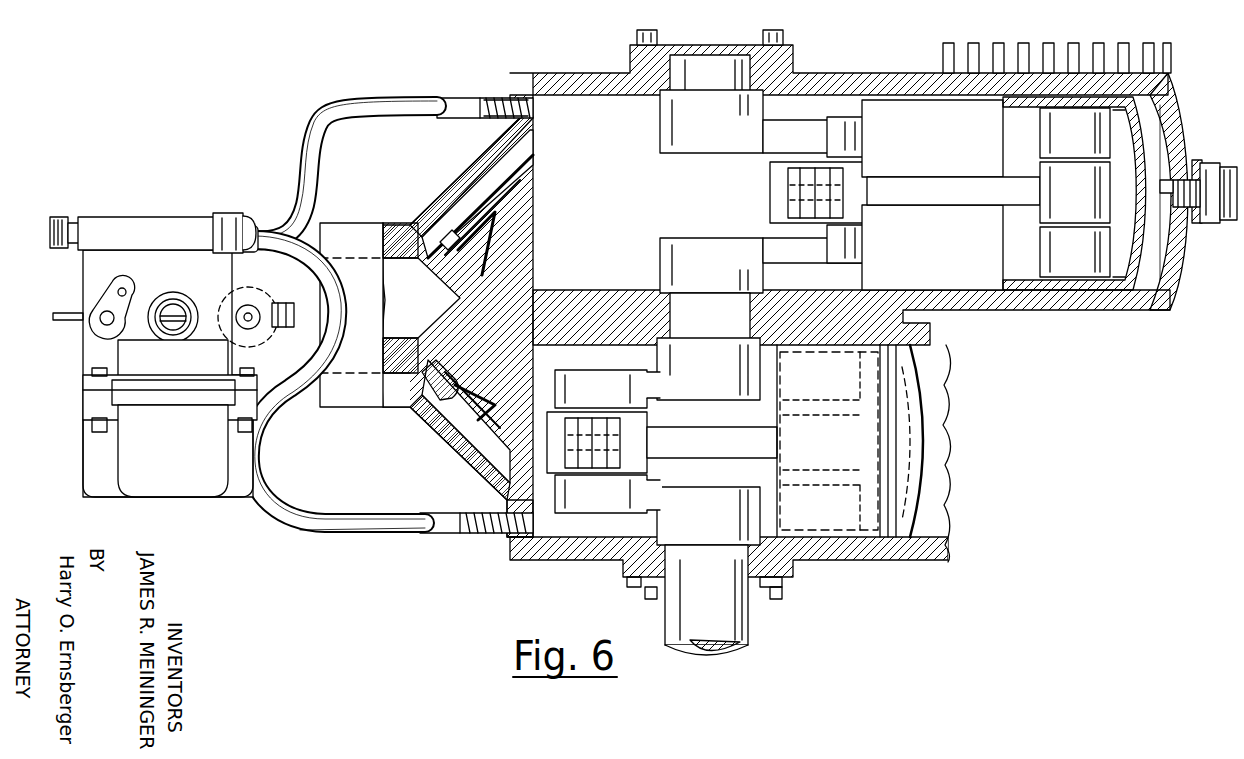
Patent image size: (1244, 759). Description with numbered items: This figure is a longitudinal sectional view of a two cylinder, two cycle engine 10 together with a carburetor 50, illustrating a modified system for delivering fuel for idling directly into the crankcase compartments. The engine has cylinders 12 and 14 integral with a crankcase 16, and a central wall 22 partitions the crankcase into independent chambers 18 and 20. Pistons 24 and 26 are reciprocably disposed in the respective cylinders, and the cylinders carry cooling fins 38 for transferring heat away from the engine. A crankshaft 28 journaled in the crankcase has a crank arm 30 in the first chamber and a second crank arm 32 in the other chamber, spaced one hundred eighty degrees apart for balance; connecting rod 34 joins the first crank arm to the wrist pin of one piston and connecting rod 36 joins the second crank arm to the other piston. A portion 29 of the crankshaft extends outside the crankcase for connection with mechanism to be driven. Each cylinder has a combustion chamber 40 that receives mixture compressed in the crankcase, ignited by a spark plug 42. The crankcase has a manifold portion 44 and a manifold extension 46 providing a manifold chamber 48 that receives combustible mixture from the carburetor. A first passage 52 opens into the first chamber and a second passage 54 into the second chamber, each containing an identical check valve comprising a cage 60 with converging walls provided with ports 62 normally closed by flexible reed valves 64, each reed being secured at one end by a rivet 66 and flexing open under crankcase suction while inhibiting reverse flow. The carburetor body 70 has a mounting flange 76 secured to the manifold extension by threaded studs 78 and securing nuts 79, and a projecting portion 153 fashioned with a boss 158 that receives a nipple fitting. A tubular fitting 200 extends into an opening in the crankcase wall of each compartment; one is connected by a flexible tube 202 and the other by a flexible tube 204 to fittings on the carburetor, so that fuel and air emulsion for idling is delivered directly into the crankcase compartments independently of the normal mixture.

The engine 10 is at (785, 312).
The cylinder 12 is at (1070, 300).
The cylinder 14 is at (905, 560).
The crankcase 16 is at (552, 54).
The chamber 18 is at (650, 202).
The chamber 20 is at (740, 418).
The central wall 22 is at (625, 292).
The piston 24 is at (1152, 115).
The piston 26 is at (918, 385).
The crankshaft 28 is at (683, 248).
The crankshaft portion 29 is at (750, 625).
The crank arm 30 is at (868, 135).
The crank arm 32 is at (530, 552).
The connecting rod 34 is at (903, 172).
The connecting rod 36 is at (705, 465).
The cooling fins 38 is at (1030, 42).
The combustion chamber 40 is at (1142, 160).
The spark plug 42 is at (1222, 163).
The manifold portion 44 is at (500, 152).
The manifold extension 46 is at (352, 242).
The manifold chamber 48 is at (420, 322).
The carburetor 50 is at (172, 321).
The first passage 52 is at (525, 175).
The second passage 54 is at (478, 448).
The cage 60 is at (432, 255).
The ports 62 is at (512, 200).
The reed valve 64 is at (515, 220).
The rivet 66 is at (512, 262).
The carburetor body 70 is at (148, 262).
The mounting flange 76 is at (312, 396).
The threaded studs 78 is at (272, 330).
The securing nuts 79 is at (290, 300).
The projecting portion 153 is at (233, 213).
The boss 158 is at (235, 250).
The tubular fitting 200 is at (445, 98).
The flexible tube 202 is at (295, 518).
The flexible tube 204 is at (310, 133).